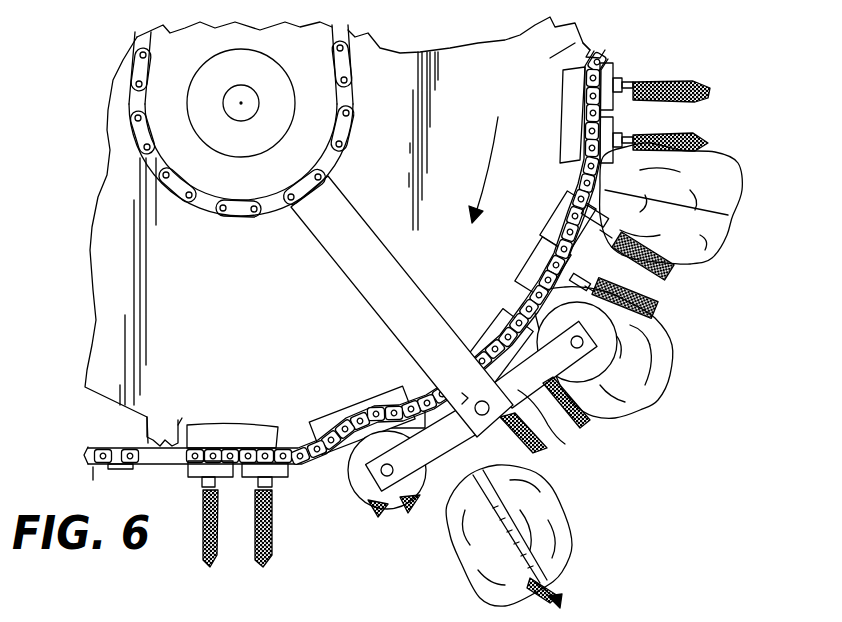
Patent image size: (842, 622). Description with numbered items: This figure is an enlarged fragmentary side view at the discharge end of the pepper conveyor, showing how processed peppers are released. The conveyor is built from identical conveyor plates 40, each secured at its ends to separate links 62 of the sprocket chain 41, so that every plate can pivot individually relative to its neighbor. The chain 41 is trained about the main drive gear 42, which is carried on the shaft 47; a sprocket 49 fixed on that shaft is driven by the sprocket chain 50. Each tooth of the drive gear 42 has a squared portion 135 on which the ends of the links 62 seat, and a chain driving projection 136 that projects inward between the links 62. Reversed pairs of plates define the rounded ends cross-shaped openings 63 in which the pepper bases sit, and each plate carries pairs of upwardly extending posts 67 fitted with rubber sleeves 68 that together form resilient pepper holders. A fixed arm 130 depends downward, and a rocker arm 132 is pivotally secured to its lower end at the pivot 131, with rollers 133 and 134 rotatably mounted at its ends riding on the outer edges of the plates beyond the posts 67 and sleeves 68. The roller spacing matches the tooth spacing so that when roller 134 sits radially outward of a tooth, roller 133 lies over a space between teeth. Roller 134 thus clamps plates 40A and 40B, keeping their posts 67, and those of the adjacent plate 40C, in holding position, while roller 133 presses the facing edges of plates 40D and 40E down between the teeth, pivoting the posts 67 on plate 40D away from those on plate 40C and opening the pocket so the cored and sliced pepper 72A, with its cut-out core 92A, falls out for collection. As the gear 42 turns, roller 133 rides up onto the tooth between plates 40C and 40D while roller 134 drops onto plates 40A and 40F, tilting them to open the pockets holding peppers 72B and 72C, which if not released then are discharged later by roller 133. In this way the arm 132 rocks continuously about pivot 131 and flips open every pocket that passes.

The conveyor plate 40 is at (198, 465).
The conveyor plate 40A is at (545, 270).
The conveyor plate 40B is at (512, 318).
The conveyor plate 40C is at (475, 370).
The conveyor plate 40D is at (412, 398).
The conveyor plate 40E is at (348, 412).
The conveyor plate 40F is at (550, 233).
The sprocket chain 41 is at (107, 476).
The main drive gear 42 is at (98, 307).
The shaft 47 is at (238, 112).
The sprocket 49 is at (310, 153).
The sprocket chain 50 is at (342, 60).
The link 62 is at (232, 423).
The rounded ends cross-shaped opening 63 is at (600, 182).
The post 67 is at (590, 298).
The rubber sleeve 68 is at (675, 90).
The cored and sliced pepper 72A is at (570, 535).
The pepper 72B is at (670, 355).
The pepper 72C is at (722, 165).
The pepper core 92A is at (562, 586).
The arm 130 is at (382, 305).
The pivot 131 is at (472, 402).
The rocker arm 132 is at (555, 443).
The roller 133 is at (362, 480).
The roller 134 is at (620, 405).
The squared portion 135 is at (178, 425).
The chain driving projection 136 is at (150, 440).